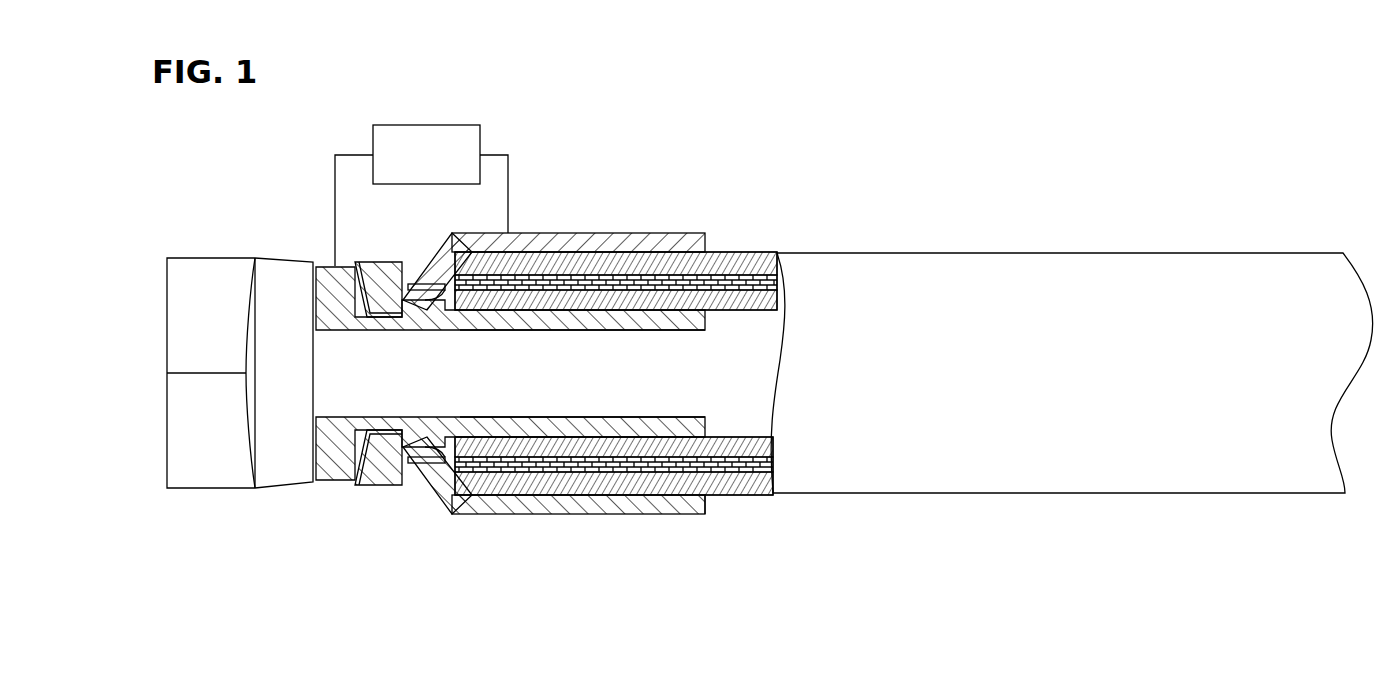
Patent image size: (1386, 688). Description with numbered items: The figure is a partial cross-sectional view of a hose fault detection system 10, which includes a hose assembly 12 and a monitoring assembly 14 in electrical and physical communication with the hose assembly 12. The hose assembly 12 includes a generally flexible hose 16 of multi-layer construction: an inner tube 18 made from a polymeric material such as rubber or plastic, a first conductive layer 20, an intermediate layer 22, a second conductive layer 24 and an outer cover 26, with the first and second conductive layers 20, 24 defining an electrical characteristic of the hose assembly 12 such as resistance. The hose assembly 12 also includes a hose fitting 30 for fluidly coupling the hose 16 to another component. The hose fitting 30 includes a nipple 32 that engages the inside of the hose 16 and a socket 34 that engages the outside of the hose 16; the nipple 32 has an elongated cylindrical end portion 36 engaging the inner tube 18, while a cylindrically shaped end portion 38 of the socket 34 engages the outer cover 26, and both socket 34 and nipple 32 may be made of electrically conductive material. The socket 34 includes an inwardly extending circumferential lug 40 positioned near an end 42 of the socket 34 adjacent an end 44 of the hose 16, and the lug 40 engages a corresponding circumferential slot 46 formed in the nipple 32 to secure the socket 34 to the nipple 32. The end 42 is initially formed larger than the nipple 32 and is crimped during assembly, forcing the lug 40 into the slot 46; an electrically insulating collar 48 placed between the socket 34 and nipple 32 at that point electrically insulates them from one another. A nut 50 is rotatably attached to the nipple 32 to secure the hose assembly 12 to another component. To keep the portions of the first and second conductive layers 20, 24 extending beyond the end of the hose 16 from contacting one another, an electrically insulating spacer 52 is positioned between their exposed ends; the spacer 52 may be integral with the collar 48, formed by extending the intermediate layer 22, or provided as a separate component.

The hose fault detection system 10 is at (977, 106).
The hose assembly 12 is at (701, 138).
The monitoring assembly 14 is at (427, 125).
The hose 16 is at (752, 250).
The inner tube 18 is at (765, 437).
The first conductive layer 20 is at (637, 287).
The intermediate layer 22 is at (611, 282).
The second conductive layer 24 is at (548, 268).
The outer cover 26 is at (763, 497).
The hose fitting 30 is at (333, 486).
The nipple 32 is at (581, 334).
The socket 34 is at (562, 518).
The elongated cylindrical end portion 36 is at (641, 325).
The cylindrically shaped end portion 38 is at (665, 516).
The circumferential lug 40 is at (385, 306).
The end of the socket 42 is at (441, 517).
The end of the hose 44 is at (434, 304).
The circumferential slot 46 is at (381, 430).
The electrically insulating collar 48 is at (364, 466).
The nut 50 is at (213, 489).
The electrically insulating spacer 52 is at (427, 458).